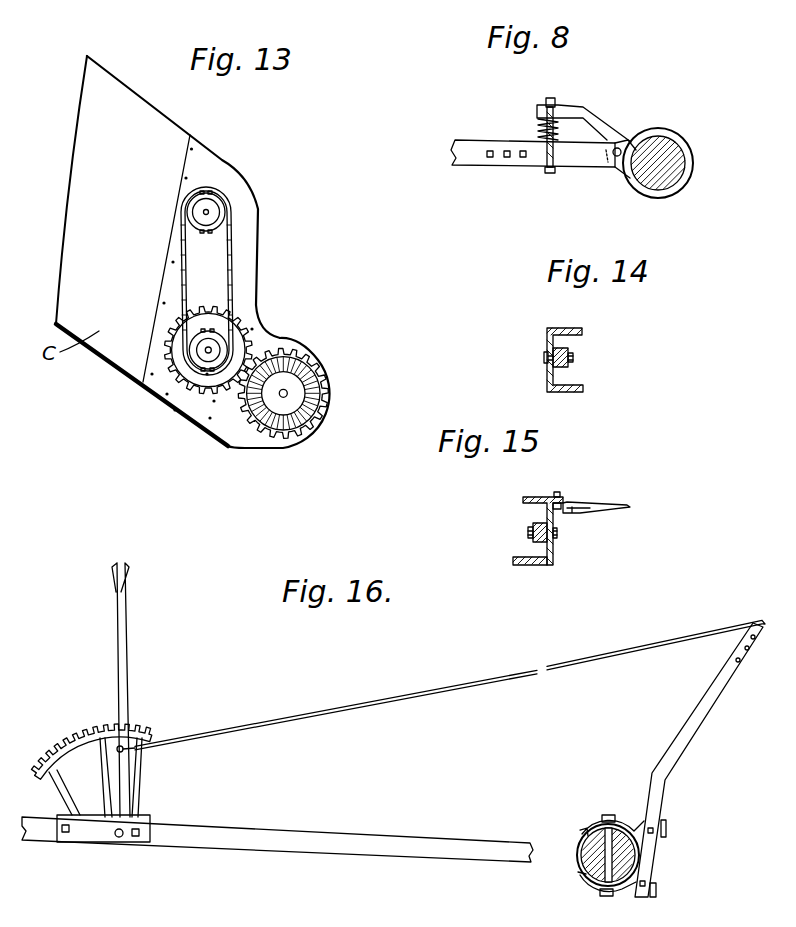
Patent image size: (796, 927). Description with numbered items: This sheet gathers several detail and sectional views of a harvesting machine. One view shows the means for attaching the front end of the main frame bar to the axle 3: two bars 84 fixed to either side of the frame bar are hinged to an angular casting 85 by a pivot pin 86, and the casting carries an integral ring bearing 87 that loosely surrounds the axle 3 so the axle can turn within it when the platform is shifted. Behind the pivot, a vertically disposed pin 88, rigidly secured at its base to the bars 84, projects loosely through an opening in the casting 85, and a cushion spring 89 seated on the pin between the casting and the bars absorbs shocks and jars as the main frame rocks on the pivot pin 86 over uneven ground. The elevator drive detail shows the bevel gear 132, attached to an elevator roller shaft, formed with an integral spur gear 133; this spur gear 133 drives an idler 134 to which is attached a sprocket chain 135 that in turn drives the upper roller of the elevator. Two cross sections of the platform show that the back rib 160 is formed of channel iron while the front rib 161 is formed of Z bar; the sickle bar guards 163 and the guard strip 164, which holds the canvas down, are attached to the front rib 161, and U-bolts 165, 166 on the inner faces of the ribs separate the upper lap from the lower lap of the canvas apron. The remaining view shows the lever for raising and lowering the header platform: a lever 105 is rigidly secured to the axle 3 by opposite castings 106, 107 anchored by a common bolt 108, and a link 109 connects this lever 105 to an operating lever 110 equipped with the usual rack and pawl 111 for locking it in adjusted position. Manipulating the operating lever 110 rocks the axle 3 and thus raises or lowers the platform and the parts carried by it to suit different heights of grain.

In FIG. 8, the axle 3 is at (673, 162).
In FIG. 16, the axle 3 is at (588, 860).
In FIG. 8, the bars 84 is at (518, 164).
In FIG. 8, the angular casting 85 is at (597, 117).
In FIG. 8, the pivot pin 86 is at (613, 167).
In FIG. 8, the ring bearing 87 is at (688, 182).
In FIG. 8, the pin 88 is at (550, 98).
In FIG. 8, the cushion spring 89 is at (538, 127).
In FIG. 16, the lever 105 is at (684, 746).
In FIG. 16, the casting 106 is at (592, 827).
In FIG. 16, the casting 107 is at (583, 893).
In FIG. 16, the bolt 108 is at (624, 792).
In FIG. 16, the link 109 is at (470, 686).
In FIG. 16, the operating lever 110 is at (122, 648).
In FIG. 16, the rack and pawl 111 is at (100, 728).
In FIG. 13, the bevel gear 132 is at (318, 394).
In FIG. 13, the spur gear 133 is at (319, 360).
In FIG. 13, the idler 134 is at (191, 408).
In FIG. 13, the sprocket chain 135 is at (233, 270).
In FIG. 14, the back rib 160 is at (547, 339).
In FIG. 15, the front rib 161 is at (545, 565).
In FIG. 15, the sickle bar guards 163 is at (617, 510).
In FIG. 15, the guard strip 164 is at (540, 497).
In FIG. 14, the U-bolt 165 is at (575, 356).
In FIG. 15, the U-bolt 166 is at (530, 527).